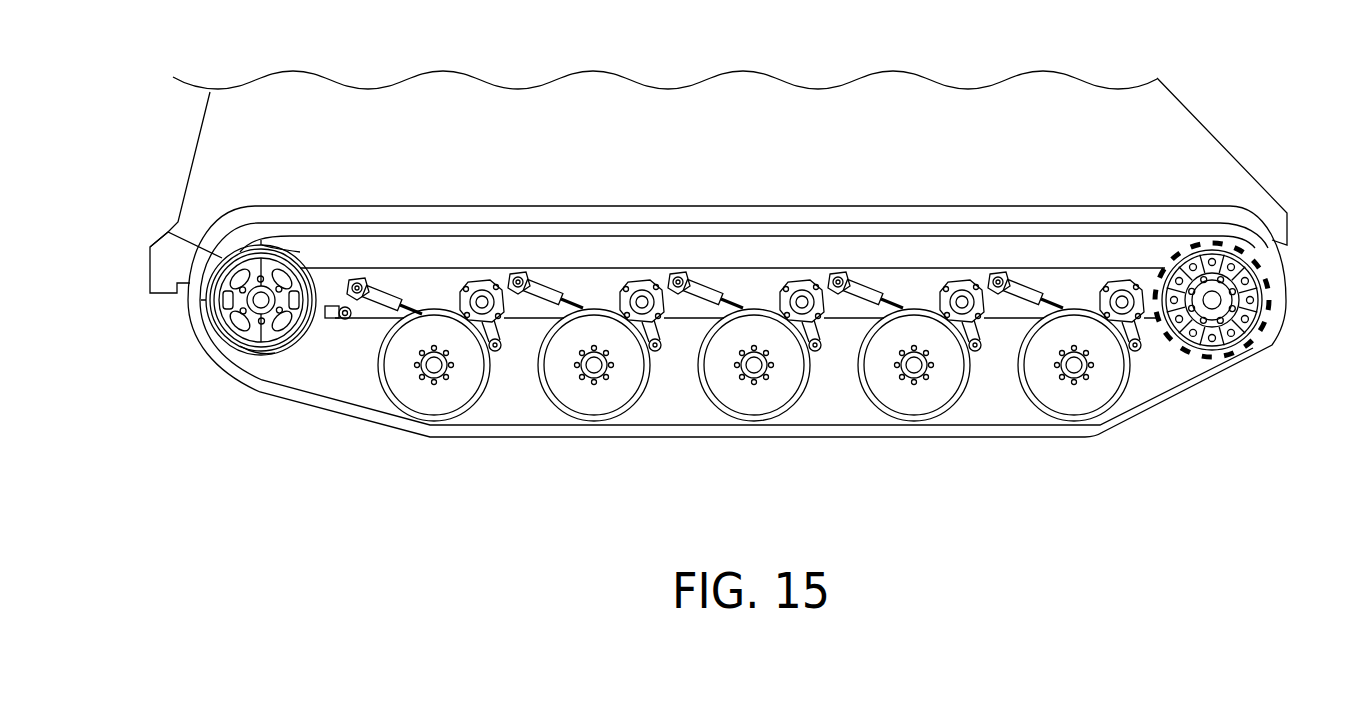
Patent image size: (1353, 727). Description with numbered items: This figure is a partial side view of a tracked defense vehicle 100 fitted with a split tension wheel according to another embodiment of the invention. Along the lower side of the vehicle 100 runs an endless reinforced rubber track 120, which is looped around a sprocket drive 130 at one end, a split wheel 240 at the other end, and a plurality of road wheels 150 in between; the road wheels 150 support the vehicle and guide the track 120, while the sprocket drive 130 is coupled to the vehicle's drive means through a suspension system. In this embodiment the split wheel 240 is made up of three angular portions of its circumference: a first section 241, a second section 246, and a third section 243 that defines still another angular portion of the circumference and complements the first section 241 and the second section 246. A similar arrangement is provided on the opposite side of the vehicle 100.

The defense vehicle 100 is at (592, 128).
The endless reinforced rubber track 120 is at (262, 382).
The sprocket drive 130 is at (1262, 328).
The road wheels 150 is at (455, 393).
The split wheel 240 is at (217, 277).
The first section 241 is at (168, 230).
The third section 243 is at (272, 352).
The second section 246 is at (305, 252).